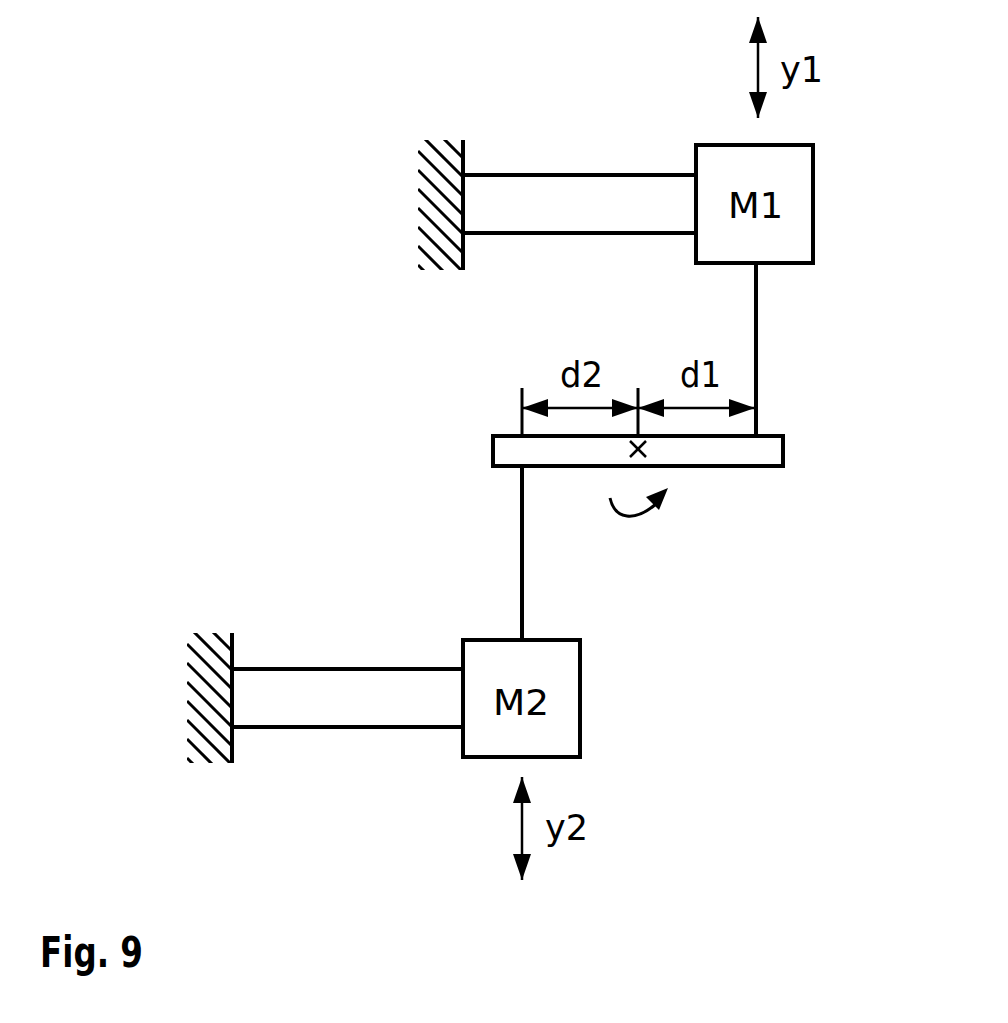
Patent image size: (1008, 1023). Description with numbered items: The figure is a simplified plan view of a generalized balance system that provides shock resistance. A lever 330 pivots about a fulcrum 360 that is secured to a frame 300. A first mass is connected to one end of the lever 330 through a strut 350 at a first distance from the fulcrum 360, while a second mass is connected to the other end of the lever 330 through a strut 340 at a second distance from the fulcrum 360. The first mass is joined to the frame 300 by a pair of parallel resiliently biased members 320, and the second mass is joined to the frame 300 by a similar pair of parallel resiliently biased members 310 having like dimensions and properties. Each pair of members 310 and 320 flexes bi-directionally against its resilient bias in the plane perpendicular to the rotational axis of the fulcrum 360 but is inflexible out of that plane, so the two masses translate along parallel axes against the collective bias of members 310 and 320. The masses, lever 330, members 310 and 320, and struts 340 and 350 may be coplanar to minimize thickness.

The frame 300 is at (432, 193).
The pair of parallel resiliently biased members 310 is at (352, 669).
The pair of parallel resiliently biased members 320 is at (592, 233).
The lever 330 is at (755, 447).
The strut 340 is at (522, 577).
The strut 350 is at (756, 333).
The fulcrum 360 is at (650, 450).